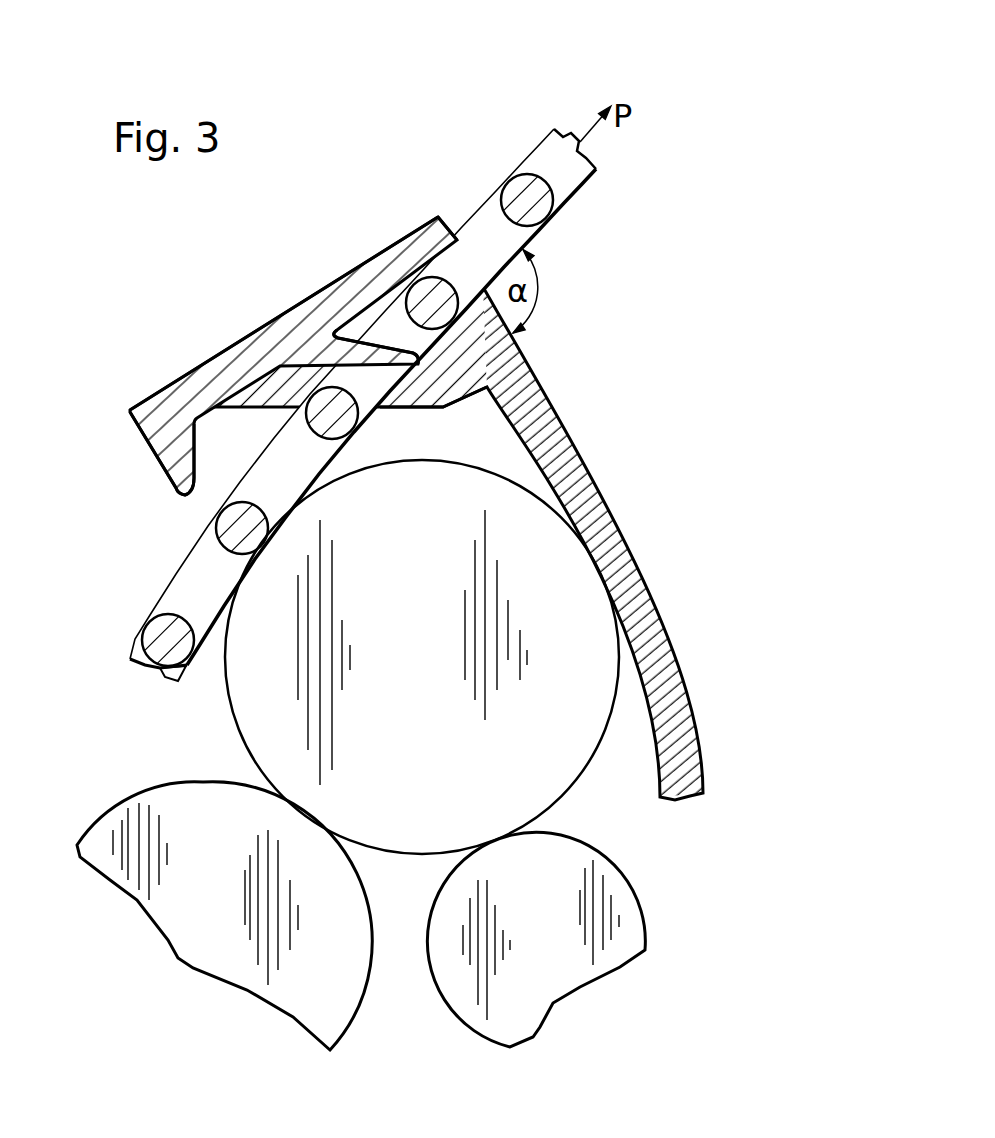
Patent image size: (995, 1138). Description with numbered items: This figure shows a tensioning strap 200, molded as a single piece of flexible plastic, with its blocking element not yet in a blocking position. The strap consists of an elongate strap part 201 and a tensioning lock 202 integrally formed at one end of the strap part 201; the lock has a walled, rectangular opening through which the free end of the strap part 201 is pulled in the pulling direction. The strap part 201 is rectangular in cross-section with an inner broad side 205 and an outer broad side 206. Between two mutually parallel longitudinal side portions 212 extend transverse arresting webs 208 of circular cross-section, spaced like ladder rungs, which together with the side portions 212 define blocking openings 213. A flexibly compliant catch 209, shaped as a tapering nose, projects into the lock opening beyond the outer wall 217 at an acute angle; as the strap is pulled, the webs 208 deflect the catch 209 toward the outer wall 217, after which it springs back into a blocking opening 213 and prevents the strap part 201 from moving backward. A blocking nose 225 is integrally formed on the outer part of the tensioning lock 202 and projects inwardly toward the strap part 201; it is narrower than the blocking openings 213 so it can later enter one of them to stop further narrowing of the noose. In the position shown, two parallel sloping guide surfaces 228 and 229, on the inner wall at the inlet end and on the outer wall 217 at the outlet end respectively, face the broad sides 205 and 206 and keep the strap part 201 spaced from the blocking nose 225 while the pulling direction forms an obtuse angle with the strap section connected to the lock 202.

The tensioning strap 200 is at (172, 348).
The strap part 201 is at (531, 233).
The tensioning lock 202 is at (253, 331).
The inner broad side 205 is at (182, 674).
The outer broad side 206 is at (133, 647).
The arresting webs 208 is at (523, 203).
The catch 209 is at (383, 352).
The longitudinal side portions 212 is at (203, 577).
The blocking openings 213 is at (484, 250).
The outer wall 217 is at (317, 320).
The blocking nose 225 is at (182, 462).
The guide surface 228 is at (380, 385).
The guide surface 229 is at (456, 242).